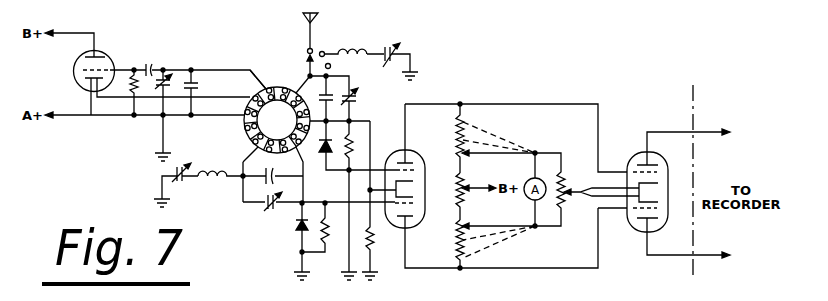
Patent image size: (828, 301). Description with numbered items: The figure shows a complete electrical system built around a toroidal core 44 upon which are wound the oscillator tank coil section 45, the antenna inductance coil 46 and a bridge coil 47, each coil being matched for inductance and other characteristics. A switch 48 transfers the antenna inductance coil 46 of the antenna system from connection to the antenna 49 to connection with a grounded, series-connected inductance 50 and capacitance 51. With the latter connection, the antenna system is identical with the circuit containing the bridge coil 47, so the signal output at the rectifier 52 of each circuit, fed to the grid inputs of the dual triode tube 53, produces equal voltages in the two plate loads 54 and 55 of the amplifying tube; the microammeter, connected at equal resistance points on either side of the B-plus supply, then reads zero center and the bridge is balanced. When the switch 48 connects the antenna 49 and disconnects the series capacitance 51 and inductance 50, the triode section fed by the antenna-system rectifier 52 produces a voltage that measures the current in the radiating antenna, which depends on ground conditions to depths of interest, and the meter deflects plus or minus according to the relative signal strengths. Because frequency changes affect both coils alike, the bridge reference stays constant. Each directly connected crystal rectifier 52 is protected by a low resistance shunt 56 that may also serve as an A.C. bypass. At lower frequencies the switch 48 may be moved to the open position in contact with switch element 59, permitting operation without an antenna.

The toroidal core 44 is at (259, 138).
The oscillator tank coil section 45 is at (258, 93).
The antenna inductance coil 46 is at (297, 81).
The bridge coil 47 is at (252, 142).
The switch 48 is at (306, 58).
The antenna 49 is at (307, 43).
The inductance 50 is at (209, 180).
The capacitance 51 is at (179, 168).
The crystal rectifier 52 is at (323, 144).
The dual triode tube 53 is at (416, 157).
The plate load 54 is at (456, 145).
The plate load 55 is at (456, 242).
The low resistance shunt 56 is at (350, 158).
The switch element 59 is at (331, 66).